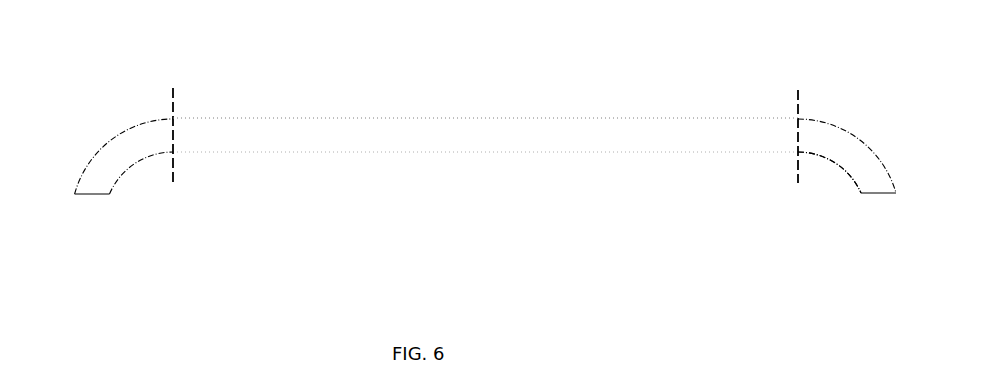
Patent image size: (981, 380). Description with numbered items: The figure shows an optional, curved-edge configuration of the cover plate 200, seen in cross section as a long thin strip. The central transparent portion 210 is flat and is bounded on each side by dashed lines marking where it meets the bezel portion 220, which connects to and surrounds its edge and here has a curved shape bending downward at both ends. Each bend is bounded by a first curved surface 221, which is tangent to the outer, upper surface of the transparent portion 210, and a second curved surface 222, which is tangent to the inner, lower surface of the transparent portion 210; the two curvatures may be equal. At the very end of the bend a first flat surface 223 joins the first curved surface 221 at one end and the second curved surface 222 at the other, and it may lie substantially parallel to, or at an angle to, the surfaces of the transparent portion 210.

The cover plate 200 is at (556, 175).
The transparent portion 210 is at (428, 125).
The bezel portion 220 is at (136, 150).
The first curved surface 221 is at (863, 147).
The second curved surface 222 is at (841, 167).
The first flat surface 223 is at (880, 195).